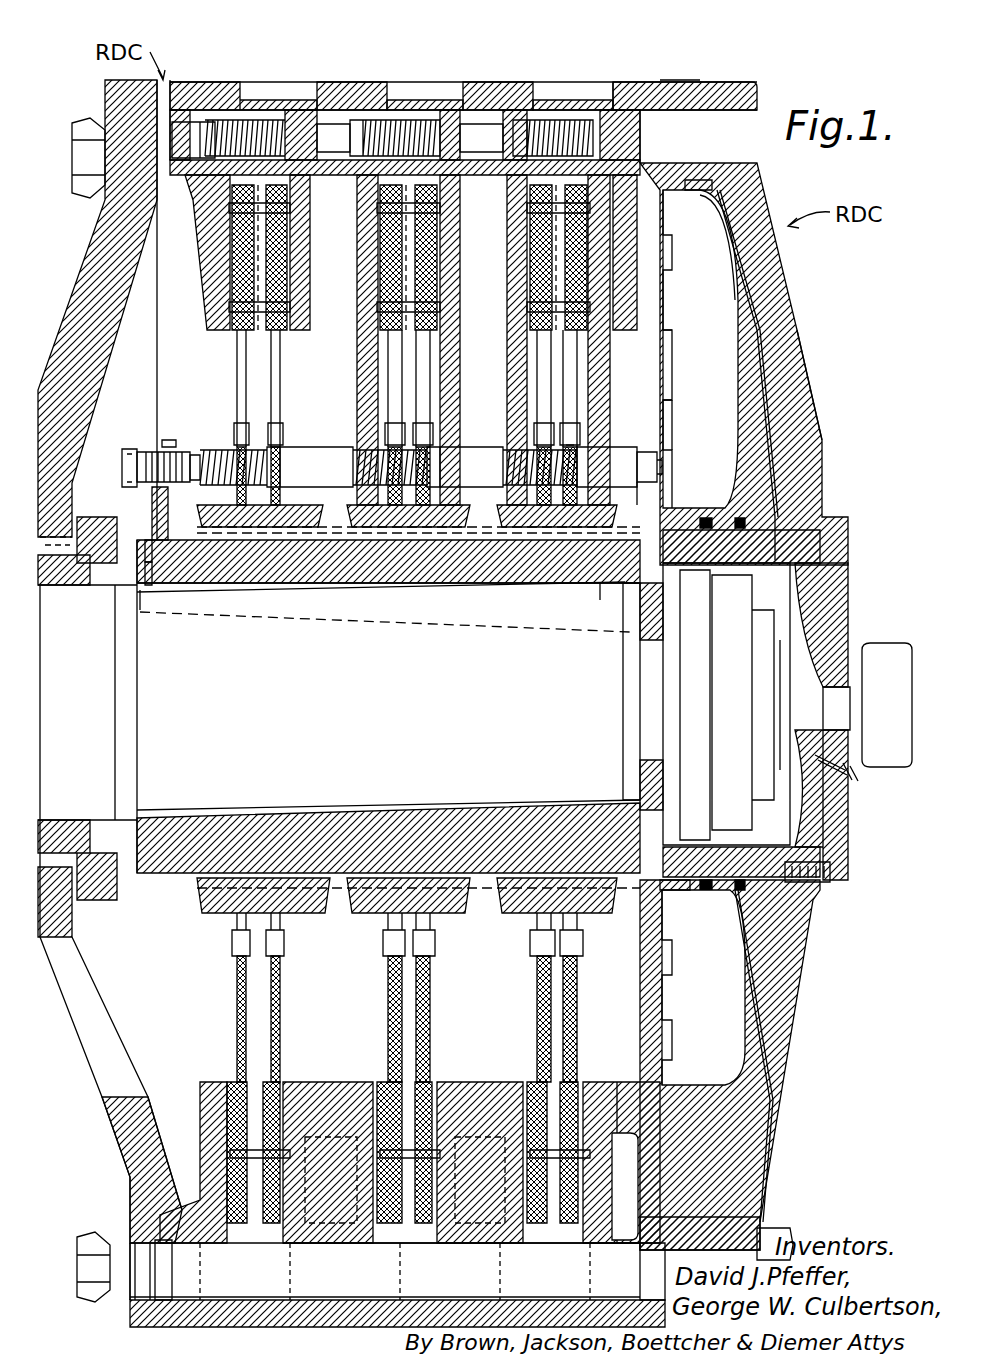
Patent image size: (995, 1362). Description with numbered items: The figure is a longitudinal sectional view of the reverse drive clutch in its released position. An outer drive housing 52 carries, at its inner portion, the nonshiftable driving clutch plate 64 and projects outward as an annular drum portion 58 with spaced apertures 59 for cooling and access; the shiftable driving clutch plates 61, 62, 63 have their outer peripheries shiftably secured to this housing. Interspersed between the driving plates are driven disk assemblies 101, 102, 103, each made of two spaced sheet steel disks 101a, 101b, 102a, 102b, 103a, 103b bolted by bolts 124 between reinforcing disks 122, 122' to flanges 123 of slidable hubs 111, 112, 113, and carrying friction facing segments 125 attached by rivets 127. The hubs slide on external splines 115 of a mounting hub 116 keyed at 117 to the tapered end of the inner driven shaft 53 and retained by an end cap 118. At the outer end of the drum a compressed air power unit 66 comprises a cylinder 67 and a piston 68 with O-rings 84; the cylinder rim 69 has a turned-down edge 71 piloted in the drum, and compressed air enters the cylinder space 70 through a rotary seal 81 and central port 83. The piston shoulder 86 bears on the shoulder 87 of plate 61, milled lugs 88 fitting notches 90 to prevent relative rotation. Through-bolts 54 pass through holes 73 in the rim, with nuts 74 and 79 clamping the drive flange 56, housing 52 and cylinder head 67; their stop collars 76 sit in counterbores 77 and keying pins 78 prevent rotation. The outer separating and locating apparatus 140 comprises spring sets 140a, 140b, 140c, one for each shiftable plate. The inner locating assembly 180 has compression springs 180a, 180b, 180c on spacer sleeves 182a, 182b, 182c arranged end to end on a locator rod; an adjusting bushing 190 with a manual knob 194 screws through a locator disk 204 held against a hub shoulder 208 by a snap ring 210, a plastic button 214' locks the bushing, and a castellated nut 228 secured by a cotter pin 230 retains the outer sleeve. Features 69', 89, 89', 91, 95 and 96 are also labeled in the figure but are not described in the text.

The outer drive housing 52 is at (386, 72).
The inner driven shaft 53 is at (278, 716).
The through-bolts 54 is at (410, 1272).
The drive flange 56 is at (130, 1305).
The annular drum housing portion 58 is at (490, 86).
The spaced apertures 59 is at (300, 100).
The first shiftable driving clutch plate 61 is at (600, 330).
The second shiftable driving clutch plate 62 is at (455, 330).
The third shiftable driving clutch plate 63 is at (305, 330).
The nonshiftable driving clutch plate 64 is at (199, 271).
The compressed air power unit 66 is at (812, 297).
The outer cylinder 67 is at (806, 398).
The piston 68 is at (770, 430).
The annular outer rim 69 is at (706, 629).
The flange edge 69' is at (635, 79).
The cylinder space 70 is at (778, 466).
The turned-down inner edge 71 is at (665, 80).
The holes 73 is at (660, 1250).
The nuts 74 is at (770, 1235).
The stop collars 76 is at (165, 1272).
The annular counterbores 77 is at (155, 1258).
The keying pins 78 is at (160, 1305).
The nuts 79 is at (88, 1235).
The rotary seal 81 is at (886, 755).
The central port 83 is at (855, 716).
The O-rings 84 is at (705, 185).
The abutment shoulder 86 is at (657, 356).
The abutment shoulder 87 is at (695, 340).
The milled lugs 88 is at (676, 430).
The seat 89 is at (636, 1188).
The seat 89' is at (659, 136).
The notches 90 is at (675, 420).
The carrier segment 91 is at (590, 1250).
The carrier segment 95 is at (492, 1250).
The carrier segment 96 is at (300, 1243).
The first driven disk assembly 101 is at (558, 333).
The sheet steel disk 101a is at (570, 1035).
The sheet steel disk 101b is at (540, 1050).
The second driven disk assembly 102 is at (408, 333).
The sheet steel disk 102a is at (425, 1050).
The sheet steel disk 102b is at (385, 1060).
The third driven disk assembly 103 is at (259, 333).
The sheet steel disk 103a is at (275, 1066).
The sheet steel disk 103b is at (237, 1060).
The hub 111 is at (540, 545).
The hub 112 is at (400, 545).
The hub 113 is at (268, 540).
The external splines 115 is at (655, 495).
The splined mounting hub 116 is at (612, 520).
The key 117 is at (598, 600).
The end cap 118 is at (672, 683).
The steel reinforcing disk 122 is at (580, 412).
The steel reinforcing disk 122' is at (457, 407).
The flanges 123 is at (275, 1005).
The bolts 124 is at (240, 934).
The friction facing segments 125 is at (385, 262).
The rivets 127 is at (525, 305).
The outer separating and locating apparatus 140 is at (170, 143).
The spring set 140a is at (550, 110).
The spring set 140b is at (400, 110).
The spring set 140c is at (250, 110).
The inner locating assembly 180 is at (108, 462).
The compression spring 180a is at (508, 447).
The compression spring 180b is at (360, 447).
The compression spring 180c is at (215, 447).
The spacer sleeve 182a is at (602, 450).
The spacer sleeve 182b is at (470, 450).
The spacer sleeve 182c is at (318, 451).
The adjusting bushing 190 is at (148, 450).
The manual adjusting knob 194 is at (130, 482).
The locator disk 204 is at (160, 447).
The shoulder 208 is at (165, 560).
The snap ring 210 is at (150, 548).
The plastic button 214' is at (185, 439).
The castellated nut 228 is at (580, 430).
The cotter pin 230 is at (655, 447).